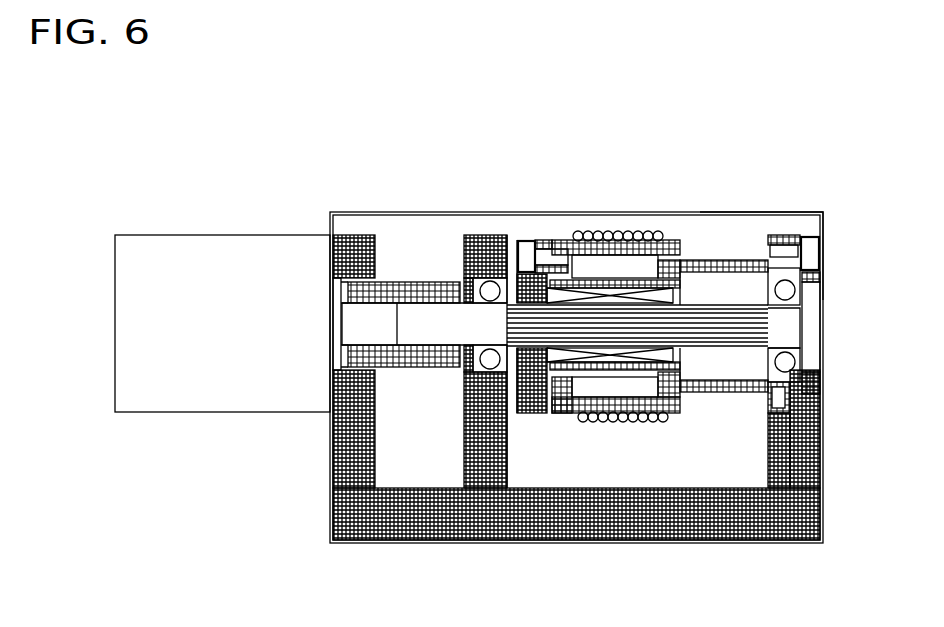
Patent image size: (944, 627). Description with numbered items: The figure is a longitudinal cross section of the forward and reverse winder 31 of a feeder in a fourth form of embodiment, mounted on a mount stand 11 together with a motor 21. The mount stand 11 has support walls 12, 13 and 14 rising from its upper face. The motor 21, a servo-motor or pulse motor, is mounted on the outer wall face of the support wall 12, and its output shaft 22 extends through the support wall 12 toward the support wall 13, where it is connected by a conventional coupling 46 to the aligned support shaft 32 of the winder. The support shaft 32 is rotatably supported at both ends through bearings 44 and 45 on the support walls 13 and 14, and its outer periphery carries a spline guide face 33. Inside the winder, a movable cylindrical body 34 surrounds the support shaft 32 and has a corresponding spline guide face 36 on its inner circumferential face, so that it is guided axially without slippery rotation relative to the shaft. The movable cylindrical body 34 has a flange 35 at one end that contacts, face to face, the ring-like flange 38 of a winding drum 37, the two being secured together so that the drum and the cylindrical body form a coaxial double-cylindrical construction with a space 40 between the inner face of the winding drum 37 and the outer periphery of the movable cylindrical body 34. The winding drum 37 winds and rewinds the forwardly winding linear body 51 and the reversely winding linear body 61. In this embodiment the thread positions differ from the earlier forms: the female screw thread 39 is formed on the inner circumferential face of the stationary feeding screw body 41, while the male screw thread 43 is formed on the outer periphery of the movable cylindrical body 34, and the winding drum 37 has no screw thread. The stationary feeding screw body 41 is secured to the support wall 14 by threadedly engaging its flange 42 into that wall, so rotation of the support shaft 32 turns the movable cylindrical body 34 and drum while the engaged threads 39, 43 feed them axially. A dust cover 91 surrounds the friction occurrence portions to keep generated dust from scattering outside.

The mount stand 11 is at (343, 230).
The support wall 12 is at (358, 265).
The support wall 13 is at (490, 275).
The support wall 14 is at (797, 240).
The motor 21 is at (230, 262).
The output shaft 22 is at (376, 320).
The forward and reverse winder 31 is at (514, 252).
The support shaft 32 is at (425, 327).
The guide face 33 is at (593, 323).
The movable cylindrical body 34 is at (668, 388).
The flange 35 is at (522, 412).
The guide face 36 is at (617, 350).
The winding drum 37 is at (590, 422).
The flange 38 is at (567, 378).
The female screw thread 39 is at (678, 272).
The space 40 is at (643, 270).
The stationary feeding screw body 41 is at (713, 265).
The flange 42 is at (778, 400).
The male screw thread 43 is at (622, 278).
The bearing 44 is at (479, 265).
The bearing 45 is at (774, 290).
The coupling 46 is at (400, 290).
The forwardly winding linear body 51 is at (659, 231).
The reversely winding linear body 61 is at (578, 231).
The dust cover 91 is at (814, 205).